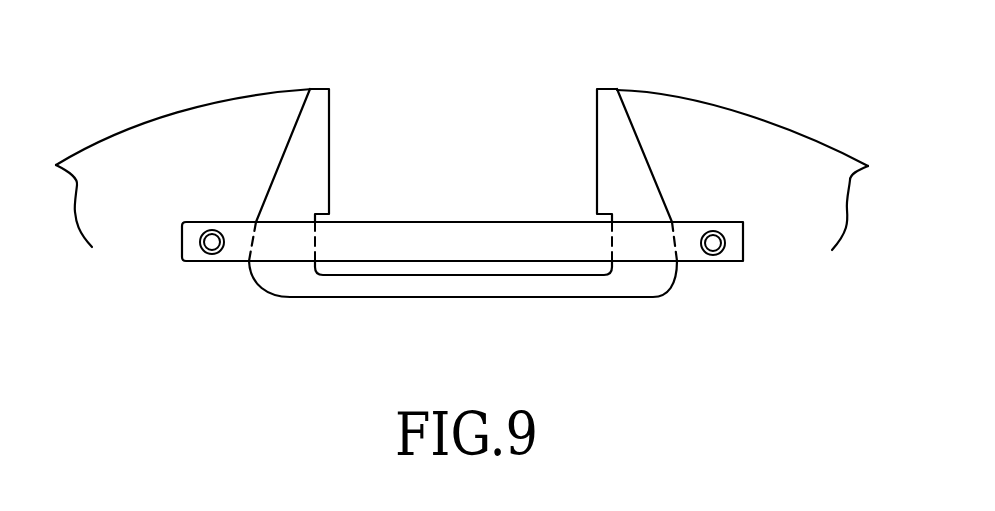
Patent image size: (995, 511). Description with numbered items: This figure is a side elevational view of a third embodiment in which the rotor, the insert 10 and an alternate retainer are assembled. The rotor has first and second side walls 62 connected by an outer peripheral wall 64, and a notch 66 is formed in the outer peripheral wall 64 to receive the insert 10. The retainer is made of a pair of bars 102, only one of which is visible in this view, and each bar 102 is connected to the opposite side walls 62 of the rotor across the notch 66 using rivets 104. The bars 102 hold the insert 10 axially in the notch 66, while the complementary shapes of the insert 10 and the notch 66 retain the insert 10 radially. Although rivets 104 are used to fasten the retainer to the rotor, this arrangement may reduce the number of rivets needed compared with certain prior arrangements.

The insert 10 is at (617, 158).
The side wall 62 is at (150, 215).
The outer peripheral wall 64 is at (138, 127).
The notch 66 is at (273, 293).
The bar 102 is at (690, 253).
The rivet 104 is at (201, 253).